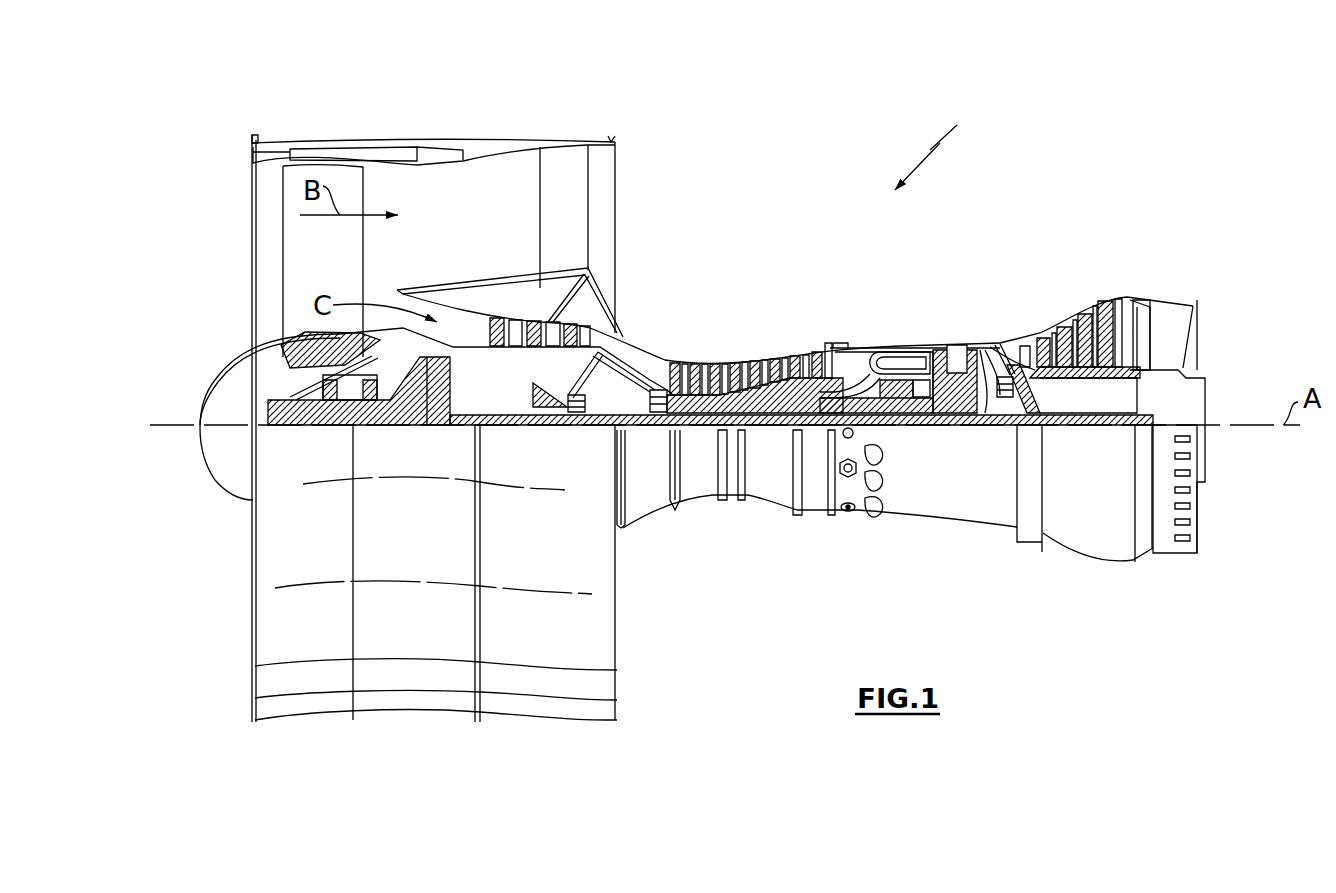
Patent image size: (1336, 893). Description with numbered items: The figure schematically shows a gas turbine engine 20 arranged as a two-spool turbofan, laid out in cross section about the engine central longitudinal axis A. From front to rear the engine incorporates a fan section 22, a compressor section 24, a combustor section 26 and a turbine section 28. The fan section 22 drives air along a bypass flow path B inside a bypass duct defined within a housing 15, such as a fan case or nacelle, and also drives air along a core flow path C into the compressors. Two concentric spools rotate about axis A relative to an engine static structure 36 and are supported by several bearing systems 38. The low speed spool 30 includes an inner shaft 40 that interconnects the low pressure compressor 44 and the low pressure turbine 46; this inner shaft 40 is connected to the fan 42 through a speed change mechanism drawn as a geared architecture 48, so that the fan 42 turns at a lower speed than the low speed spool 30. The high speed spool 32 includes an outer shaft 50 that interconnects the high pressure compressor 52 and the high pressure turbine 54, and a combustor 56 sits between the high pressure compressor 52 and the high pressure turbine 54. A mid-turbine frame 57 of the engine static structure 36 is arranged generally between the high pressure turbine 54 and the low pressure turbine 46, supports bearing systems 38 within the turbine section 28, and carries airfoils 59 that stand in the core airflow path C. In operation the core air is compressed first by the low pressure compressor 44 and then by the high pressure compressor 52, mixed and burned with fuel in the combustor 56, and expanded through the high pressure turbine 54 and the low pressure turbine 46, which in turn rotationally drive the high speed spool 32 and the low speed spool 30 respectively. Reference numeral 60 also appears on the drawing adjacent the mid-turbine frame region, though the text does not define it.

The housing 15 is at (435, 147).
The gas turbine engine 20 is at (941, 151).
The fan section 22 is at (366, 130).
The compressor section 24 is at (665, 333).
The combustor section 26 is at (888, 322).
The turbine section 28 is at (1040, 287).
The low speed spool 30 is at (770, 432).
The high speed spool 32 is at (818, 358).
The engine static structure 36 is at (812, 480).
The bearing systems 38 is at (575, 412).
The inner shaft 40 is at (625, 432).
The fan 42 is at (340, 270).
The low pressure compressor 44 is at (590, 288).
The low pressure turbine 46 is at (1080, 300).
The geared architecture 48 is at (441, 408).
The outer shaft 50 is at (895, 412).
The high pressure compressor 52 is at (740, 350).
The high pressure turbine 54 is at (950, 345).
The combustor 56 is at (890, 368).
The mid-turbine frame 57 is at (1003, 332).
The airfoils 59 is at (1027, 391).
The airfoils 60 is at (1040, 335).